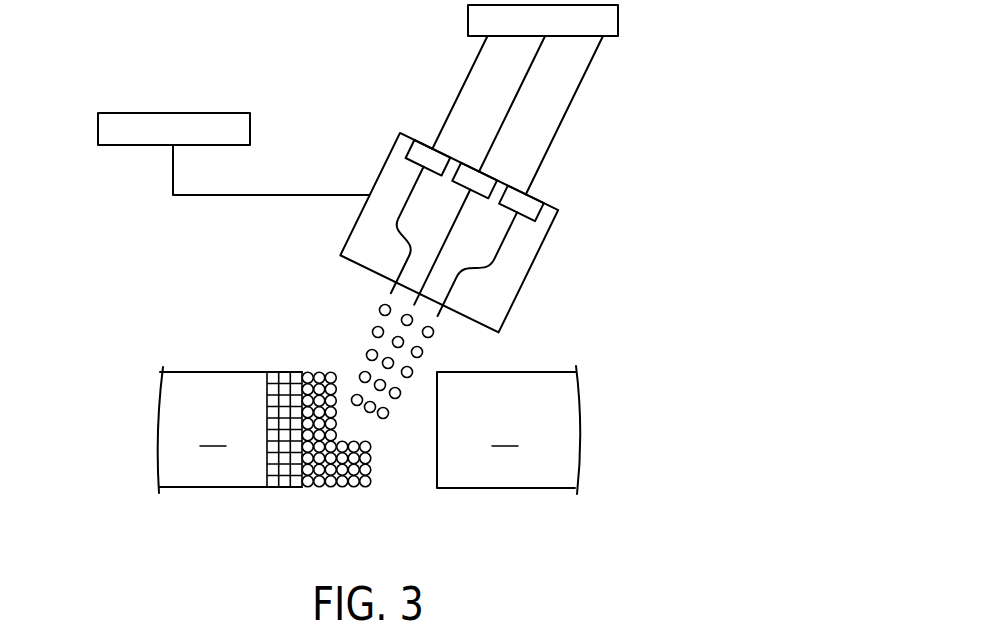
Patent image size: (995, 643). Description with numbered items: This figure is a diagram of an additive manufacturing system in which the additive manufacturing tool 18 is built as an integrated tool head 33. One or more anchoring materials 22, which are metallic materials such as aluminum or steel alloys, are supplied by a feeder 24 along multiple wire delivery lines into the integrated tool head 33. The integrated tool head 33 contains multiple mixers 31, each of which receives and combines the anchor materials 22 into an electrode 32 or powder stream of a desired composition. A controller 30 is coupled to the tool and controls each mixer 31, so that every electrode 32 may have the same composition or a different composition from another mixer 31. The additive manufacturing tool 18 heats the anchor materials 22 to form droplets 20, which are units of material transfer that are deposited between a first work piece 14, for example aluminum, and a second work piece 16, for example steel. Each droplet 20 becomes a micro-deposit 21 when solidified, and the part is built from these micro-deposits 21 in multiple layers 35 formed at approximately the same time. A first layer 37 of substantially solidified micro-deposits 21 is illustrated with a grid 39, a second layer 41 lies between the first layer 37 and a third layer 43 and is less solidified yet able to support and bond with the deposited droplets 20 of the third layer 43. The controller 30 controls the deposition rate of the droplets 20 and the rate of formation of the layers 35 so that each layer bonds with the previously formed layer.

The first work piece 14 is at (230, 430).
The second work piece 16 is at (508, 430).
The additive manufacturing tool 18 is at (592, 202).
The droplets 20 is at (372, 331).
The micro-deposits 21 is at (333, 366).
The anchoring materials 22 is at (459, 91).
The feeder 24 is at (619, 27).
The controller 30 is at (98, 128).
The mixer 31 is at (427, 144).
The electrode 32 is at (441, 247).
The integrated tool head 33 is at (527, 274).
The layers 35 is at (317, 460).
The first layer 37 is at (302, 497).
The grid 39 is at (270, 366).
The second layer 41 is at (337, 497).
The third layer 43 is at (337, 497).